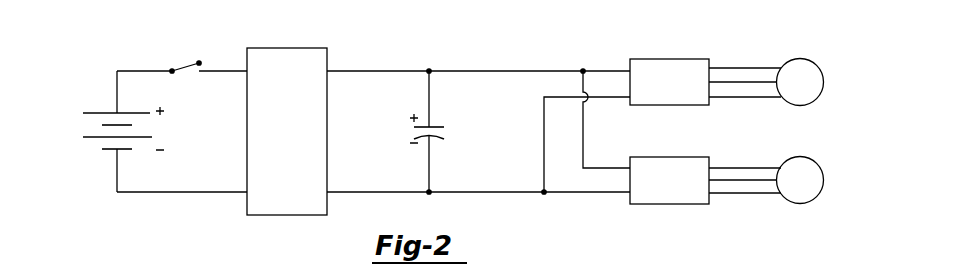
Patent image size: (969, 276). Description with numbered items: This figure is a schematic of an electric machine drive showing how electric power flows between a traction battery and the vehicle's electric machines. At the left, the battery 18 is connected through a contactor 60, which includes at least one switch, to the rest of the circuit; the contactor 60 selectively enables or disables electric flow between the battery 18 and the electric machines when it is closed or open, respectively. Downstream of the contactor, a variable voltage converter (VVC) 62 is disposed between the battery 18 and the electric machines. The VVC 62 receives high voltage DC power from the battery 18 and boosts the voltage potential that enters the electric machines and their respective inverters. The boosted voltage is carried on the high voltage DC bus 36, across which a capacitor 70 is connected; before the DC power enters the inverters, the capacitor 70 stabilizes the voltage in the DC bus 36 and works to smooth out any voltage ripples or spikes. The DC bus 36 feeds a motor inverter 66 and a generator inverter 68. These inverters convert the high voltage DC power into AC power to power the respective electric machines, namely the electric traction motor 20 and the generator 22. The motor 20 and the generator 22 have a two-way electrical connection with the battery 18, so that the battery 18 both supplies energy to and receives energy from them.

The traction battery 18 is at (82, 127).
The contactor 60 is at (187, 60).
The variable voltage converter (VVC) 62 is at (288, 48).
The capacitor 70 is at (435, 138).
The high voltage DC bus 36 is at (467, 199).
The motor inverter 66 is at (670, 59).
The generator inverter 68 is at (670, 204).
The electric traction motor 20 is at (826, 82).
The generator 22 is at (826, 180).